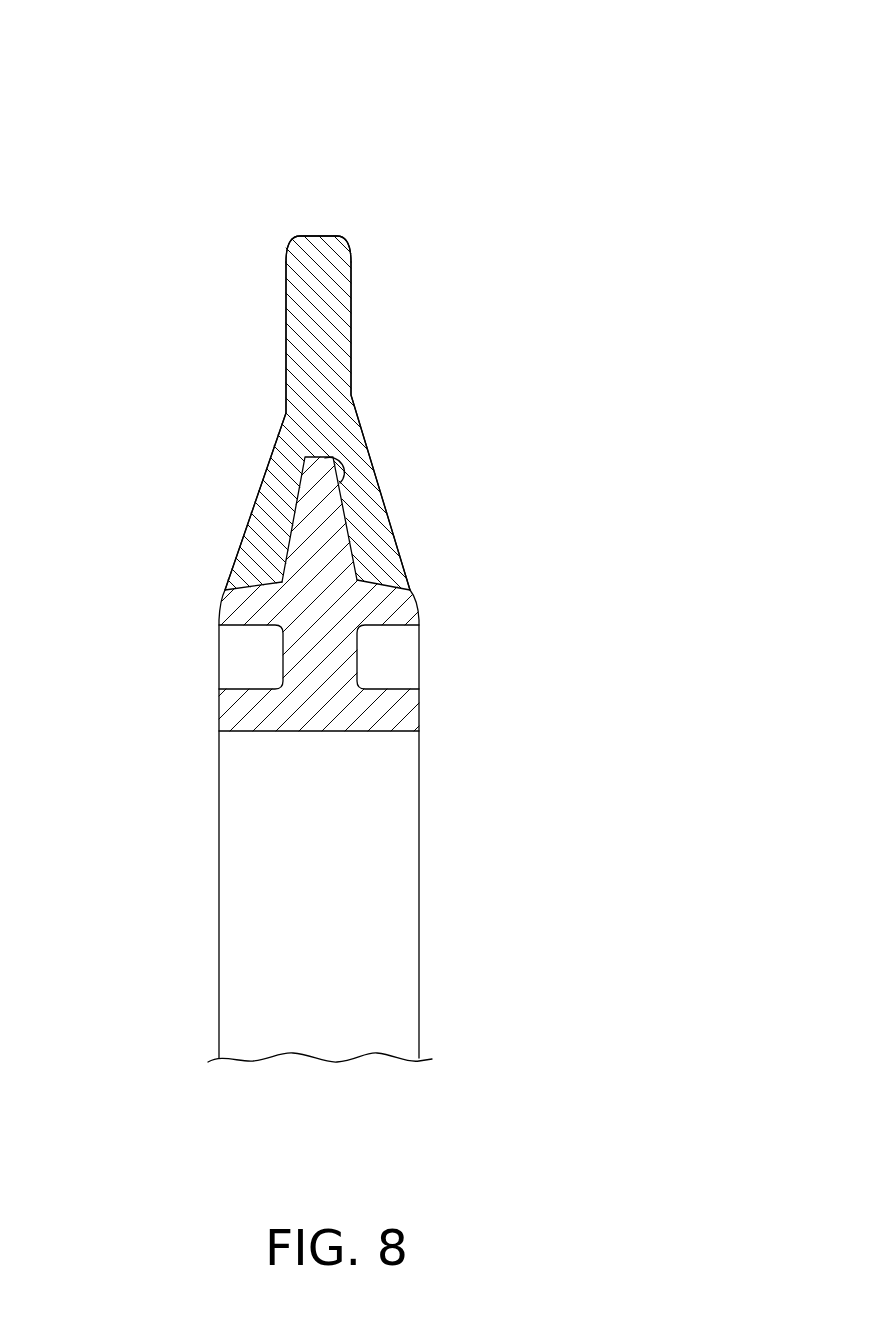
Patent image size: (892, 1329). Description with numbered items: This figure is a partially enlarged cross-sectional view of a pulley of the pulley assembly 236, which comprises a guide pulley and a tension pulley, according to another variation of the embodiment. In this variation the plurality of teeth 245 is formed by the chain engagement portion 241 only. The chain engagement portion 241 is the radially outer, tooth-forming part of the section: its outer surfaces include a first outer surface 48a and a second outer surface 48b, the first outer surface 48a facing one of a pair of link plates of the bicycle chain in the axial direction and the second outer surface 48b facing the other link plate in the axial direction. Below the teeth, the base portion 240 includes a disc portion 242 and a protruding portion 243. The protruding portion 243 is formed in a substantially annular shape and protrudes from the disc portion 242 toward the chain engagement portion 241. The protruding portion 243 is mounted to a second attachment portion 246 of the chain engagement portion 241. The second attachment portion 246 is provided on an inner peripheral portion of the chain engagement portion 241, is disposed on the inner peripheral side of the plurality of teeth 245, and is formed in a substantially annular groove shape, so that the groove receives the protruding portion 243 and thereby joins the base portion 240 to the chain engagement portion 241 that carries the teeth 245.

The pulley assembly 236 is at (433, 137).
The chain engagement portion 241 is at (317, 220).
The first outer surface 48a is at (286, 339).
The second outer surface 48b is at (352, 288).
The plurality of teeth 245 is at (410, 331).
The base portion 240 is at (428, 605).
The protruding portion 243 is at (312, 517).
The second attachment portion 246 is at (345, 482).
The disc portion 242 is at (253, 612).